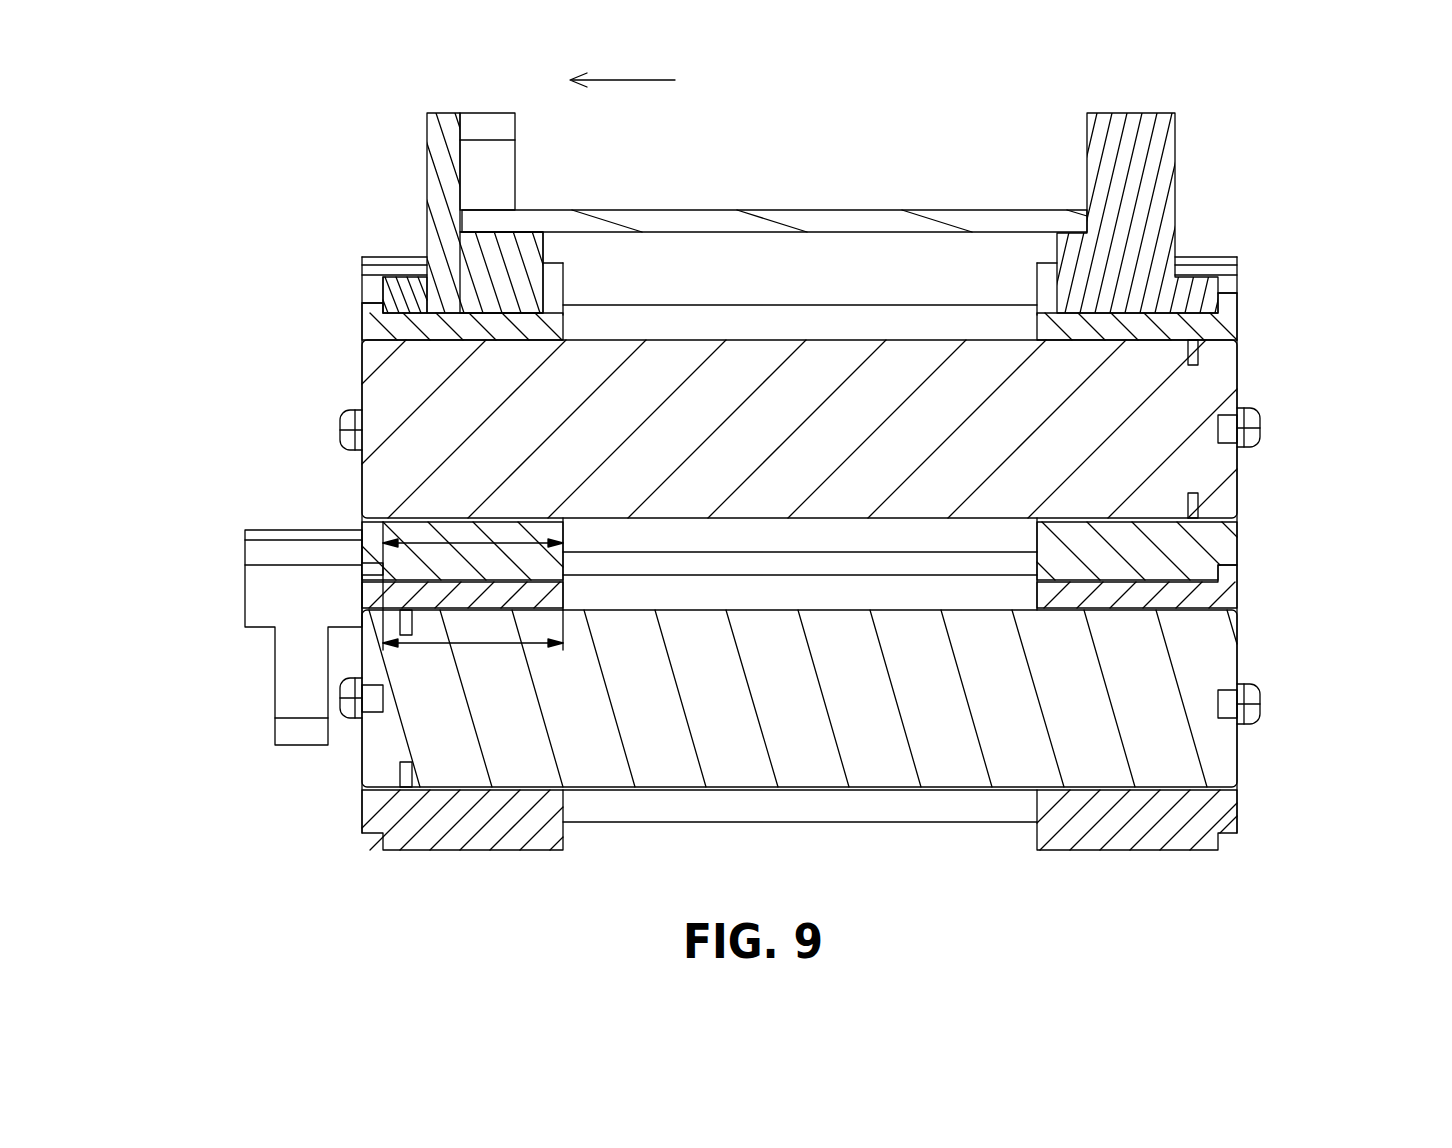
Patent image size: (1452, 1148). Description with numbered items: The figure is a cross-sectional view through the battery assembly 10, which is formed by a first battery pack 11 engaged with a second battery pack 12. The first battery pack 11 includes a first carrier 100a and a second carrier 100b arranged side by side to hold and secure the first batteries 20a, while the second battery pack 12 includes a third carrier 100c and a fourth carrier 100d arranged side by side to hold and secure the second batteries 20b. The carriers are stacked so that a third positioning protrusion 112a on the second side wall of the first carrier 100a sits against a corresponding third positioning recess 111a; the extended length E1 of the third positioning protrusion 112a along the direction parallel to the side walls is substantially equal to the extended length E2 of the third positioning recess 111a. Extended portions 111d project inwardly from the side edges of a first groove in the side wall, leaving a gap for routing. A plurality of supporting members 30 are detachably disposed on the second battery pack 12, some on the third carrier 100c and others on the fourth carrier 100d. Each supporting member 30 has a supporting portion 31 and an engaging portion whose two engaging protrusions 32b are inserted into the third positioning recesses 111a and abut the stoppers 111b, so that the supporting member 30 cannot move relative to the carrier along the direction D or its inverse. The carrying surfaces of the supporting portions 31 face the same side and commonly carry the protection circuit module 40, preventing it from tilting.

The battery assembly 10 is at (1435, 909).
The first battery pack 11 is at (1313, 675).
The second battery pack 12 is at (1313, 377).
The first batteries 20a is at (935, 765).
The second batteries 20b is at (960, 375).
The supporting member 30 is at (447, 128).
The supporting portion 31 is at (513, 250).
The engaging protrusion 32b is at (422, 307).
The protection circuit module 40 is at (822, 220).
The first carrier 100a is at (423, 823).
The second carrier 100b is at (1207, 815).
The third carrier 100c is at (390, 330).
The fourth carrier 100d is at (1225, 322).
The third positioning recess 111a is at (455, 305).
The stopper 111b is at (370, 575).
The extended portion 111d is at (370, 303).
The third positioning protrusion 112a is at (488, 577).
The extended length E1 is at (457, 522).
The extended length E2 is at (480, 647).
The direction D is at (622, 64).